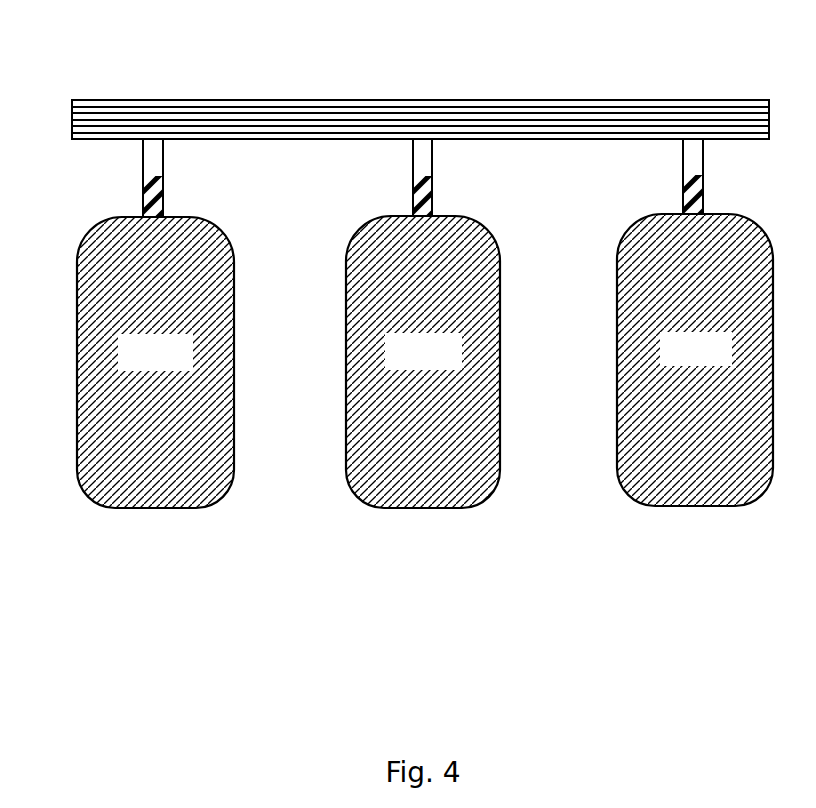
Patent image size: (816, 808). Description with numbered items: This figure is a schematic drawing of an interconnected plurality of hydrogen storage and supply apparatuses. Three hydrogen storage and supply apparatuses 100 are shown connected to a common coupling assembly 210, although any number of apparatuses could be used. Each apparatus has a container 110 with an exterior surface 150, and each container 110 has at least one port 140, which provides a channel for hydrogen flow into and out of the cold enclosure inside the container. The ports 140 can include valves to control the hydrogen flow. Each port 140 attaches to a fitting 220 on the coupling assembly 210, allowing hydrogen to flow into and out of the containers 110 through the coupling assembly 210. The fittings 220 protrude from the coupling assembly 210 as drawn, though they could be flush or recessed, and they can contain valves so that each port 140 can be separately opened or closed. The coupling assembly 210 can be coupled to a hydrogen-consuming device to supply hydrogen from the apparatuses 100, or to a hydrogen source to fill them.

The hydrogen storage and supply apparatus 100 is at (388, 392).
The container 110 is at (627, 505).
The port 140 is at (143, 199).
The exterior surface 150 is at (389, 361).
The coupling assembly 210 is at (497, 118).
The fitting 220 is at (153, 162).